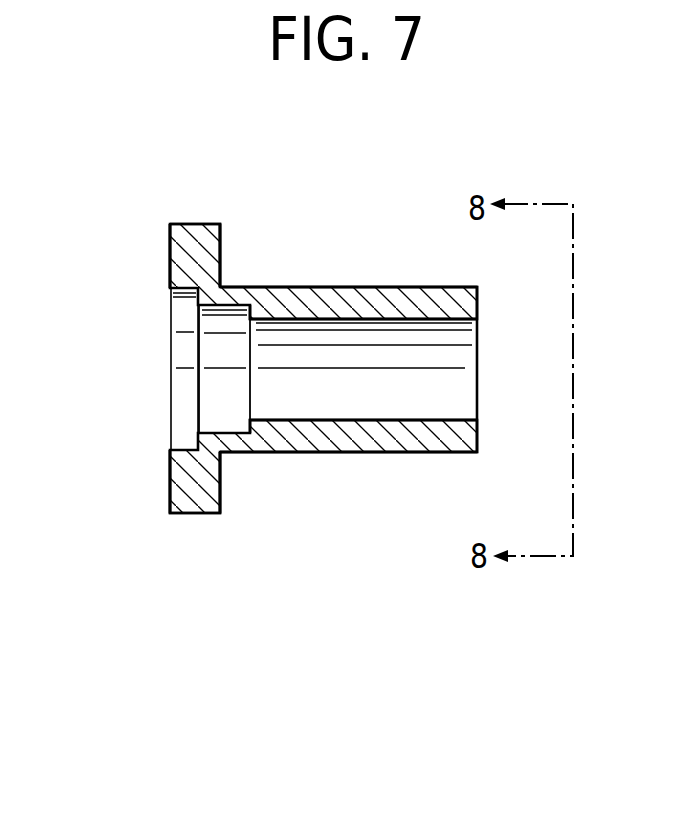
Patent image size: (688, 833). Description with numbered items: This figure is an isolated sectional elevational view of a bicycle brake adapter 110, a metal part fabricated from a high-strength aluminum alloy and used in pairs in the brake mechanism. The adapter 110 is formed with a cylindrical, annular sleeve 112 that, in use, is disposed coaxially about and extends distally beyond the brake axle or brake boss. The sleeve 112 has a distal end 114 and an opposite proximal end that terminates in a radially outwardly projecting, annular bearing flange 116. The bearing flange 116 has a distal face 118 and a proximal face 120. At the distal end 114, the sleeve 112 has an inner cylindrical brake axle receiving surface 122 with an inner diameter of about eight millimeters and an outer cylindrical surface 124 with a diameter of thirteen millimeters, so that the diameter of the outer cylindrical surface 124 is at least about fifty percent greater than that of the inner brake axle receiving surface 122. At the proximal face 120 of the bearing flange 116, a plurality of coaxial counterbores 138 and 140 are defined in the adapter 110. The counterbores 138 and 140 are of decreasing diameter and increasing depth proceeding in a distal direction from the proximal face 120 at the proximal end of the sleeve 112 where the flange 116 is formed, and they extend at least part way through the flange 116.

The brake adapter 110 is at (377, 516).
The sleeve 112 is at (313, 287).
The distal end 114 is at (380, 287).
The bearing flange 116 is at (196, 514).
The distal face 118 is at (220, 243).
The proximal face 120 is at (172, 251).
The inner cylindrical brake axle receiving surface 122 is at (401, 419).
The outer cylindrical surface 124 is at (383, 452).
The counterbore 138 is at (187, 291).
The counterbore 140 is at (223, 433).